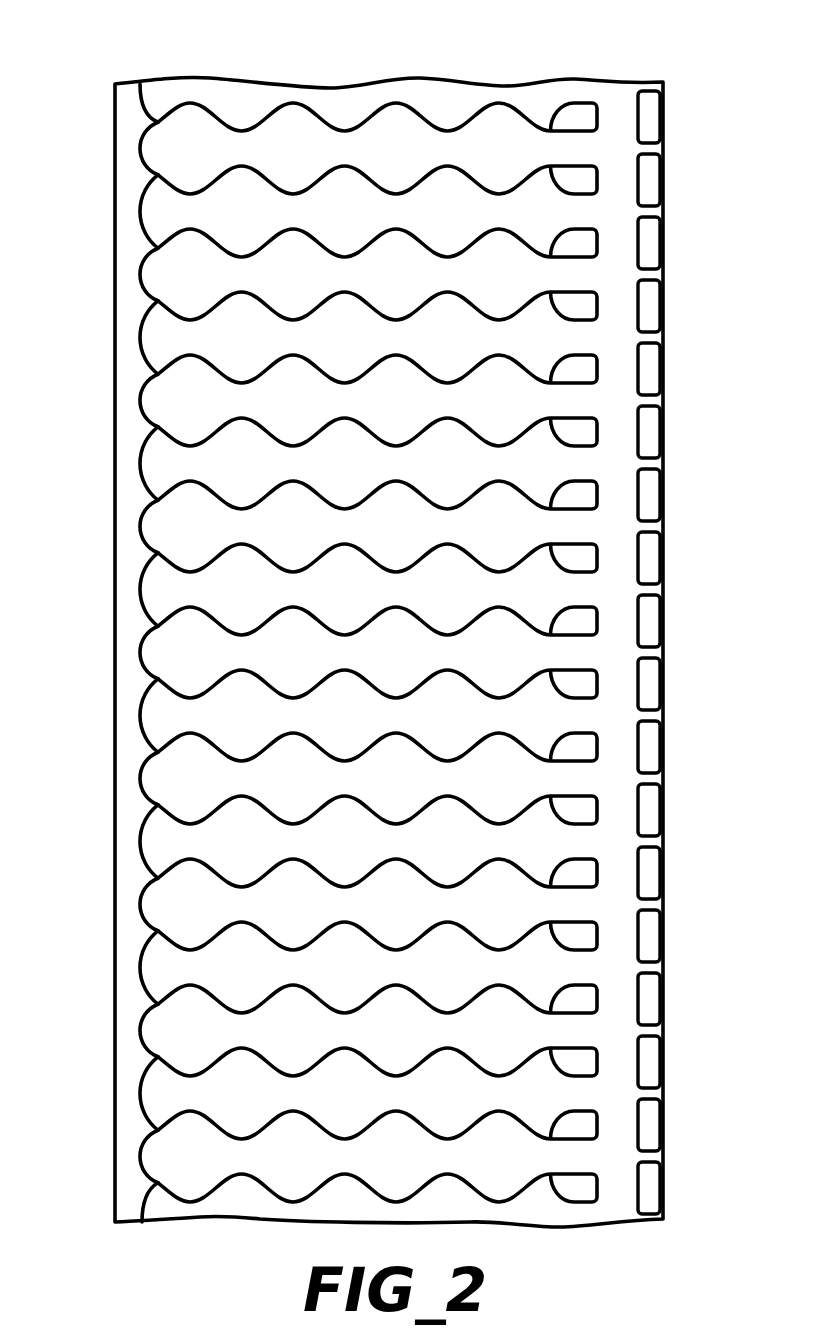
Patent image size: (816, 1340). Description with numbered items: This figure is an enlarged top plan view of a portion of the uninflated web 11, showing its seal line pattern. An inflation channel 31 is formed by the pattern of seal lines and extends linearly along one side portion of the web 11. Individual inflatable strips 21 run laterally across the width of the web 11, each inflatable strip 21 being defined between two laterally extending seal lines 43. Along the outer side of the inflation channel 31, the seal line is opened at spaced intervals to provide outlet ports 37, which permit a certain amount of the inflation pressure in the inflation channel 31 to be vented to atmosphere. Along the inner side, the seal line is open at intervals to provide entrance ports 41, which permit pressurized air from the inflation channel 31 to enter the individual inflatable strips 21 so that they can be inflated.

The web 11 is at (237, 76).
The inflatable strip 21 is at (172, 212).
The inflation channel 31 is at (614, 120).
The outlet port 37 is at (663, 208).
The entrance port 41 is at (585, 400).
The seal line 43 is at (413, 172).